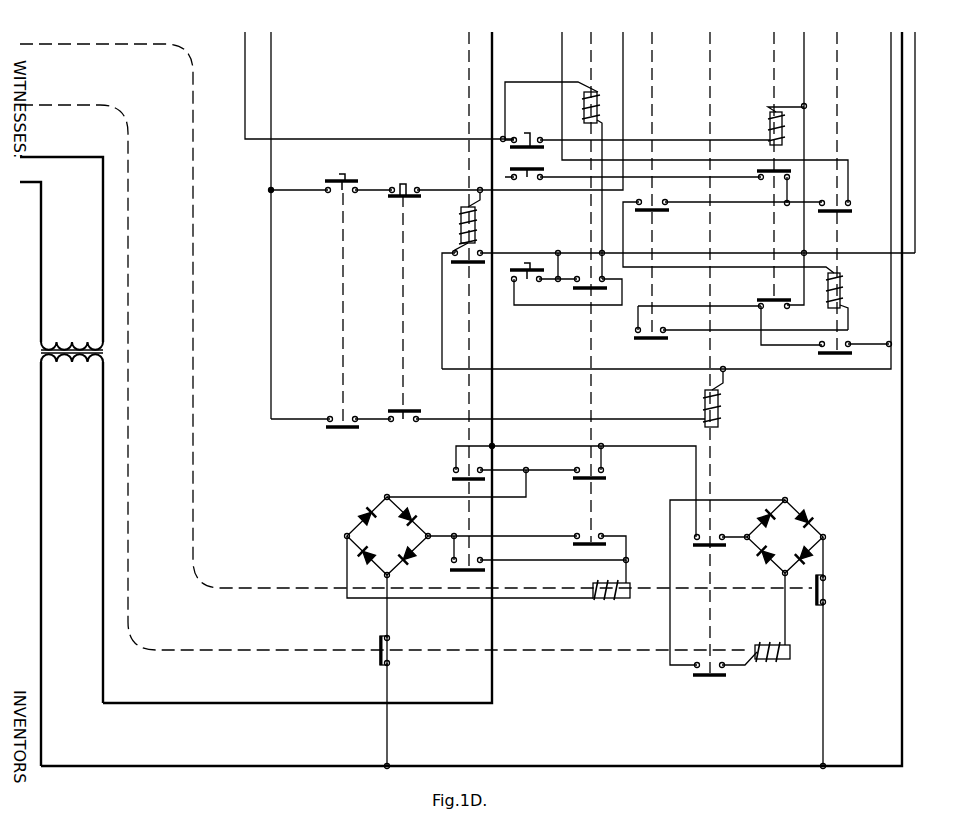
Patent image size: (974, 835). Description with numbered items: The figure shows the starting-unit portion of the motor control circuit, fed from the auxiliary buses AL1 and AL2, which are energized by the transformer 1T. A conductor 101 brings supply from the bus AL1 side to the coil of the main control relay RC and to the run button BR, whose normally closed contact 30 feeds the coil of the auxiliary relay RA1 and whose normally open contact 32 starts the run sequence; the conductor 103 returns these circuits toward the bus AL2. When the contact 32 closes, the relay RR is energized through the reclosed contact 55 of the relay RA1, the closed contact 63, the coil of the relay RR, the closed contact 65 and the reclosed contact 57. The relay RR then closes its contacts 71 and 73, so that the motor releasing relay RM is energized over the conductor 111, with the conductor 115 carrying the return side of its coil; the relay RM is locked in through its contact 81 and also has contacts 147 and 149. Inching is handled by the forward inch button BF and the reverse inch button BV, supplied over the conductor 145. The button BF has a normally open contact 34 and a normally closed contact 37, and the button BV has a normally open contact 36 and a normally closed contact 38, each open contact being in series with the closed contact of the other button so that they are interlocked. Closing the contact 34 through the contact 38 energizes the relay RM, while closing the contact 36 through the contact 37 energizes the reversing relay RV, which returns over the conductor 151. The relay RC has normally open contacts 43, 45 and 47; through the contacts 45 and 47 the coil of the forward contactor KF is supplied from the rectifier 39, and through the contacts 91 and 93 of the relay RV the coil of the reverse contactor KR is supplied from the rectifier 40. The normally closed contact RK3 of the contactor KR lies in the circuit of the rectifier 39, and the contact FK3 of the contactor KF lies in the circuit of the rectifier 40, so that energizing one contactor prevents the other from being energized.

The transformer 1T is at (55, 461).
The auxiliary bus AL1 is at (490, 677).
The auxiliary bus AL2 is at (905, 50).
The conductor 101 is at (245, 68).
The conductor 145 is at (271, 85).
The conductor 103 is at (804, 70).
The normally open contact 34 is at (360, 183).
The normally closed contact 38 is at (412, 187).
The forward inch button BF is at (332, 241).
The reverse inch button BV is at (397, 241).
The motor releasing relay RM is at (452, 227).
The normally open contact 81 is at (462, 270).
The conductor 115 is at (518, 369).
The conductor 151 is at (888, 372).
The run button BR is at (540, 123).
The normally closed contact 30 is at (531, 140).
The normally open contact 32 is at (531, 172).
The main control relay RC is at (590, 73).
The conductor 111 is at (666, 158).
The auxiliary relay RA1 is at (770, 109).
The normally closed contact 55 is at (766, 177).
The normally open contact 71 is at (830, 203).
The normally open contact 63 is at (660, 211).
The normally open contact 43 is at (568, 288).
The normally closed contact 57 is at (768, 295).
The relay RR is at (884, 287).
The normally open contact 65 is at (660, 340).
The normally open contact 73 is at (840, 344).
The normally closed contact 37 is at (336, 415).
The normally open contact 36 is at (530, 404).
The reversing relay RV is at (754, 415).
The normally open contact 147 is at (452, 479).
The normally open contact 45 is at (606, 478).
The rectifier 39 is at (385, 532).
The normally open contact 149 is at (450, 574).
The normally open contact 47 is at (593, 540).
The forward contactor KF is at (642, 617).
The normally closed contact RK3 is at (380, 648).
The rectifier 40 is at (822, 522).
The normally open contact 91 is at (714, 537).
The normally open contact 93 is at (692, 680).
The reverse contactor KR is at (808, 685).
The contact FK3 is at (826, 590).